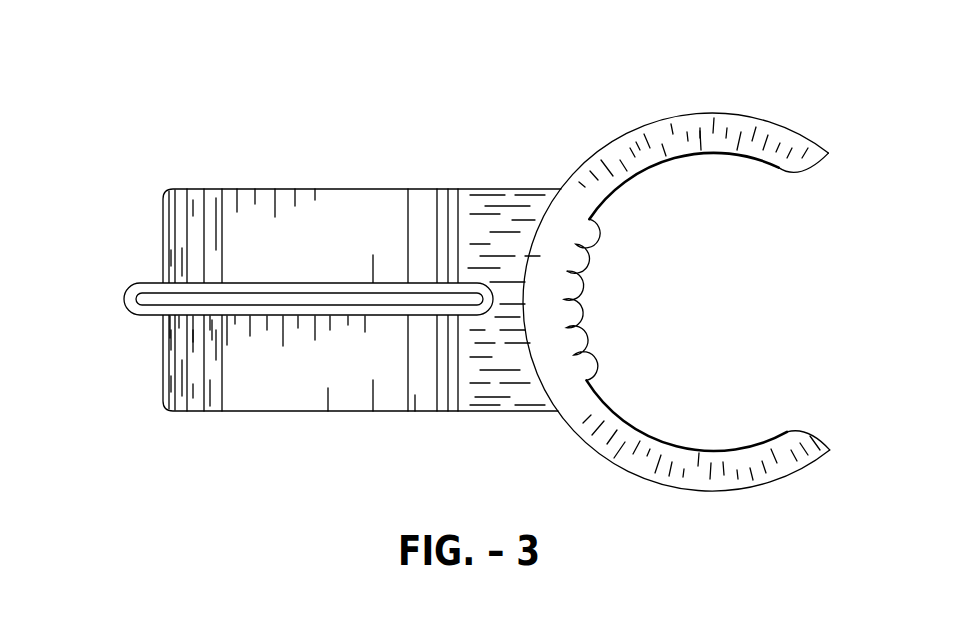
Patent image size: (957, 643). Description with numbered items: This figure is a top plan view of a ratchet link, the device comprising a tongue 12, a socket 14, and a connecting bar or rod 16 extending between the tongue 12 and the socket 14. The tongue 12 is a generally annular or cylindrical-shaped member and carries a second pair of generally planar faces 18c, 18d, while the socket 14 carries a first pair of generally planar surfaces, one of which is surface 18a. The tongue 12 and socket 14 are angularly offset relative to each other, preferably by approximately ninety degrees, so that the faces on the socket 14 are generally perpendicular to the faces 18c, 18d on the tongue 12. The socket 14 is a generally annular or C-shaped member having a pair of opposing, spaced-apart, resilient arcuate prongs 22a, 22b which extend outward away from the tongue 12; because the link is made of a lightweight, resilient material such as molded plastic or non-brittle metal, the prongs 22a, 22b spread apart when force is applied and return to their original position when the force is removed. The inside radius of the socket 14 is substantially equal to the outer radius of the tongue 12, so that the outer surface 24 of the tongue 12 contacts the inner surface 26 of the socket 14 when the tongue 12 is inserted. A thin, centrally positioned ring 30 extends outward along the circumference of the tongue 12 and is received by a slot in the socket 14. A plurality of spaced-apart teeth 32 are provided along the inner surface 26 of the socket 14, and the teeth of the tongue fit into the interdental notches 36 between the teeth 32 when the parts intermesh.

The tongue 12 is at (148, 196).
The socket 14 is at (704, 248).
The connecting bar or rod 16 is at (501, 390).
The planar surface 18a is at (681, 143).
The planar face 18c is at (240, 412).
The planar face 18d is at (262, 190).
The arcuate prong 22a is at (797, 440).
The arcuate prong 22b is at (782, 165).
The outer surface 24 is at (362, 206).
The inner surface 26 is at (689, 183).
The ring 30 is at (137, 312).
The teeth 32 is at (572, 300).
The interdental notches 36 is at (584, 238).